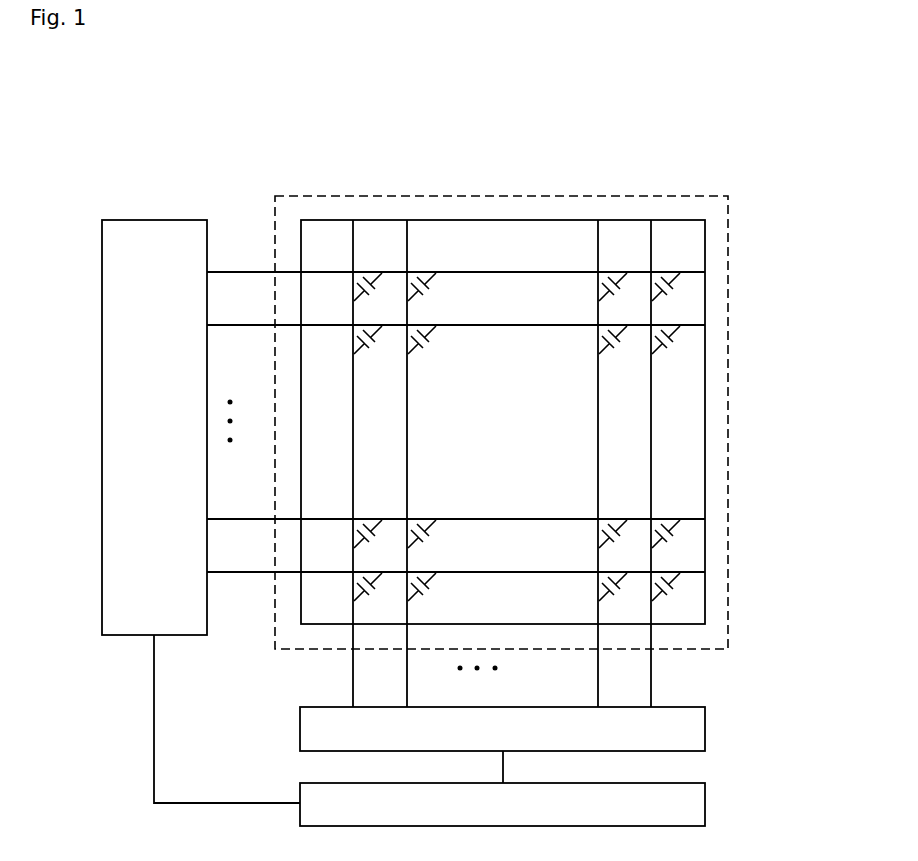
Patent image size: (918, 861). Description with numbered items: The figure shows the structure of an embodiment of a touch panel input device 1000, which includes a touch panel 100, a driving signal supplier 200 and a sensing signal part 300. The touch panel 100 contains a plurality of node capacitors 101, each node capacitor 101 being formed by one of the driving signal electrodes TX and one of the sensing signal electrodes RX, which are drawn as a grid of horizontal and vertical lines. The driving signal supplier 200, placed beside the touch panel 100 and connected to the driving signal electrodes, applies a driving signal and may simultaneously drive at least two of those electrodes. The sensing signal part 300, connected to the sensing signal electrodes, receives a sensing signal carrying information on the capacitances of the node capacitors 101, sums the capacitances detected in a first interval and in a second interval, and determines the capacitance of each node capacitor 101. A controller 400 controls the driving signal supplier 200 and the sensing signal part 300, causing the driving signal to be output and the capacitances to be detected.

The touch panel 100 is at (703, 164).
The touch panel input device 1000 is at (728, 196).
The node capacitor 101 is at (370, 272).
The driving signal supplier 200 is at (154, 220).
The sensing signal part 300 is at (705, 736).
The controller 400 is at (705, 805).